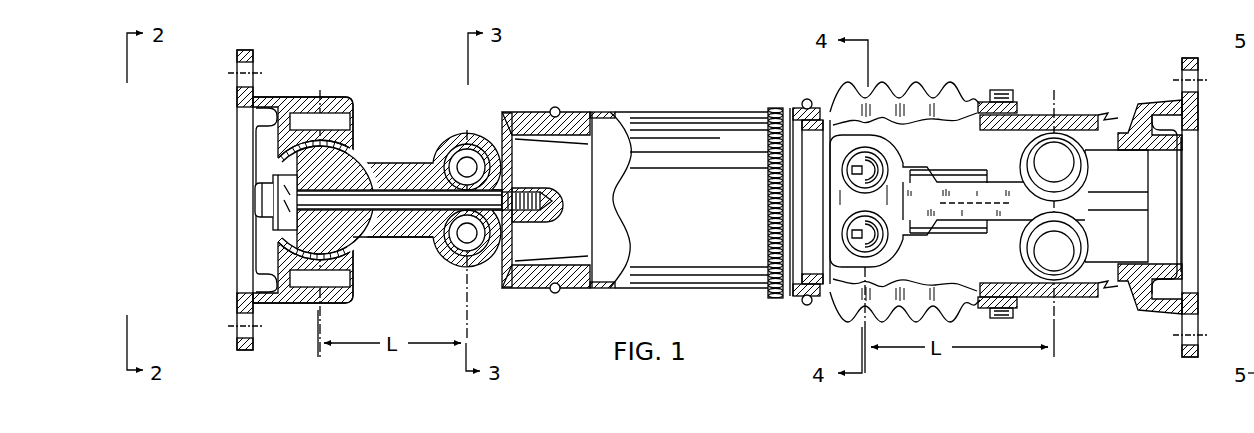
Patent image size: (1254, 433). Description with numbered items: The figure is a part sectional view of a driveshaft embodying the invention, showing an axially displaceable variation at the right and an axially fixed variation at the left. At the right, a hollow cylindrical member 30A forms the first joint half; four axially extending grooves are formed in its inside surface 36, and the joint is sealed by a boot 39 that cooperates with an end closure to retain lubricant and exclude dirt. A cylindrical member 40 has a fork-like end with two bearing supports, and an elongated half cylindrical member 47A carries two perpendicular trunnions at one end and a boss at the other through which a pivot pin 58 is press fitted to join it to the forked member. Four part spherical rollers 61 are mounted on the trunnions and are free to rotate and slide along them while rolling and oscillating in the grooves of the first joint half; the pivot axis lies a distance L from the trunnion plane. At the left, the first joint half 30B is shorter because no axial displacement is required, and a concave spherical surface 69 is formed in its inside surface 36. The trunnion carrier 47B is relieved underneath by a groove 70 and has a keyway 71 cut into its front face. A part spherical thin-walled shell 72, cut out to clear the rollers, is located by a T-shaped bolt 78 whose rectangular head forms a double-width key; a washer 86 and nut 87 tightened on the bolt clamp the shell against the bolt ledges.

The hollow cylindrical member 30A is at (1143, 103).
The first joint half 30B is at (292, 96).
The inside surface 36 is at (254, 280).
The boot 39 is at (967, 101).
The cylindrical member 40 is at (685, 112).
The elongated half cylindrical member 47A is at (937, 166).
The trunnion carrier 47B is at (393, 237).
The pivot pin 58 is at (457, 154).
The part spherical rollers 61 is at (1078, 136).
The concave spherical surface 69 is at (326, 139).
The groove 70 is at (362, 162).
The keyway 71 is at (277, 236).
The part spherical thin-walled shell 72 is at (276, 158).
The T-shaped bolt 78 is at (395, 192).
The washer 86 is at (270, 220).
The nut 87 is at (258, 186).